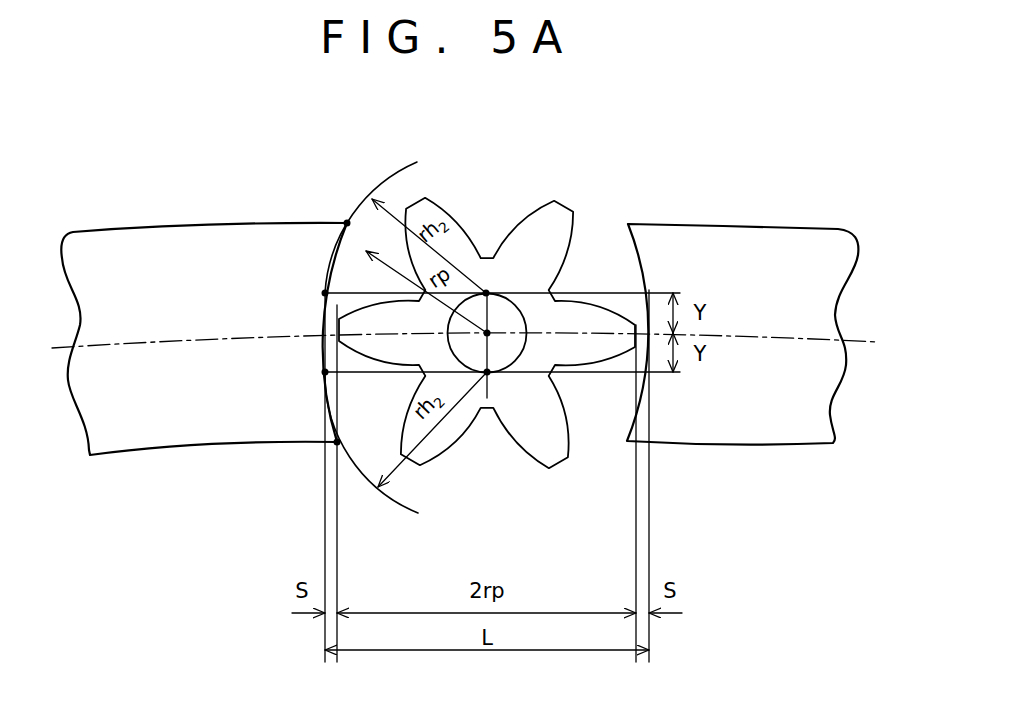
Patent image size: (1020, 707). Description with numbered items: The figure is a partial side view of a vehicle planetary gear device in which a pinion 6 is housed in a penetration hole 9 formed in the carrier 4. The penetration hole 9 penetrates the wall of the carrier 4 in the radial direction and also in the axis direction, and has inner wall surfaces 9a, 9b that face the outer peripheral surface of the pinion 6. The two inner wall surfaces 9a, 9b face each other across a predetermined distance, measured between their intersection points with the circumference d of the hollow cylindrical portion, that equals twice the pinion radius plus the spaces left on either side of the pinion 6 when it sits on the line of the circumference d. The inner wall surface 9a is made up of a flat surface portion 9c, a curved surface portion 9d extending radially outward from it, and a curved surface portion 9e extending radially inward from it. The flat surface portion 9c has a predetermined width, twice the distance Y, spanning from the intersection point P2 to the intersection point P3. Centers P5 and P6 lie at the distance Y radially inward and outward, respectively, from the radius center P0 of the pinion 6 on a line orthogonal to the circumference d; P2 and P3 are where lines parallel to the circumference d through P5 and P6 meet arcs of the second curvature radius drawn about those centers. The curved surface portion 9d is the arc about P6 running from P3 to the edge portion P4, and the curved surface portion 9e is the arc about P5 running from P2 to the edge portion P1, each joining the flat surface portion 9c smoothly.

The carrier 4 is at (722, 224).
The pinion 6 is at (572, 207).
The penetration hole 9 is at (502, 188).
The inner wall surface 9a is at (353, 241).
The inner wall surface 9b is at (627, 255).
The flat surface portion 9c is at (327, 312).
The curved surface portion 9d is at (330, 263).
The curved surface portion 9e is at (330, 411).
The circumference d is at (157, 338).
The radius center P0 is at (475, 349).
The edge portion P1 is at (336, 445).
The intersection point P2 is at (324, 373).
The intersection point P3 is at (324, 293).
The edge portion P4 is at (345, 222).
The center P5 is at (489, 374).
The center P6 is at (488, 292).